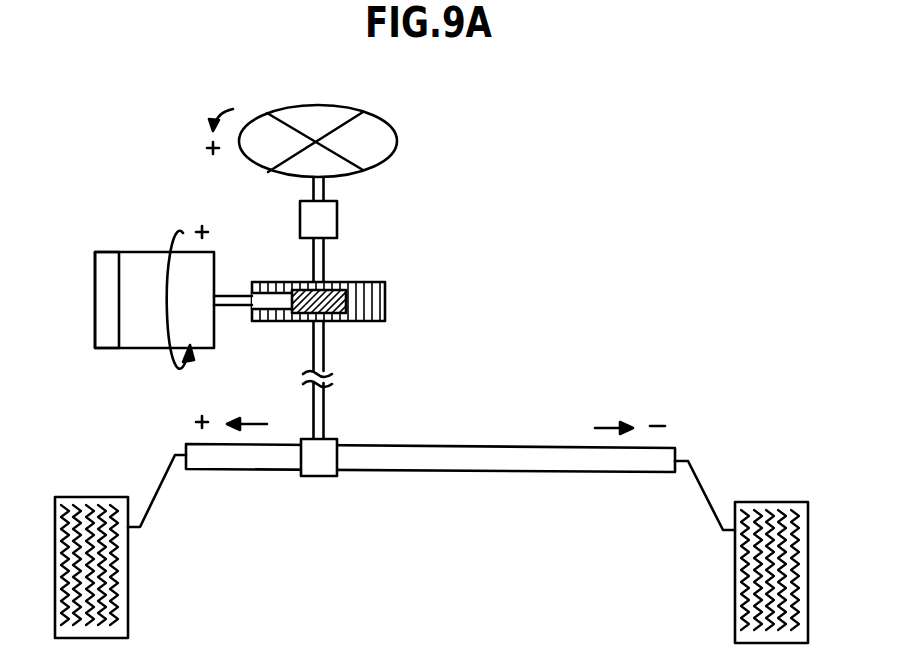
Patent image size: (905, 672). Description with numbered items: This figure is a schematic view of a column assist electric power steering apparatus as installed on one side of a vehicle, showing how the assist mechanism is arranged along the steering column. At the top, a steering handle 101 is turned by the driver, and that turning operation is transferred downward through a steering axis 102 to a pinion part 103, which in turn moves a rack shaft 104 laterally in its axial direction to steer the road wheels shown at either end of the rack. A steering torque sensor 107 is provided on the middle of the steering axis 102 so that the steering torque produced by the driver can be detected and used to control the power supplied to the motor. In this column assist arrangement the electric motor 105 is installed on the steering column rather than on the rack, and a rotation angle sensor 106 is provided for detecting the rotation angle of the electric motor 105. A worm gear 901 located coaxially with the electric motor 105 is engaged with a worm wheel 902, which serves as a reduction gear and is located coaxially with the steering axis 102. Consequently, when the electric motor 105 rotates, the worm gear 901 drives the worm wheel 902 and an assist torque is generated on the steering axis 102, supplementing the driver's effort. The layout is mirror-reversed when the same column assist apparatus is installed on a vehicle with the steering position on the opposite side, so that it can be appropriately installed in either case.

The steering handle 101 is at (397, 143).
The steering axis 102 is at (324, 397).
The pinion part 103 is at (313, 477).
The rack shaft 104 is at (493, 472).
The electric motor 105 is at (153, 348).
The rotation angle sensor 106 is at (105, 348).
The steering torque sensor 107 is at (337, 225).
The worm gear 901 is at (328, 312).
The worm wheel 902 is at (365, 282).